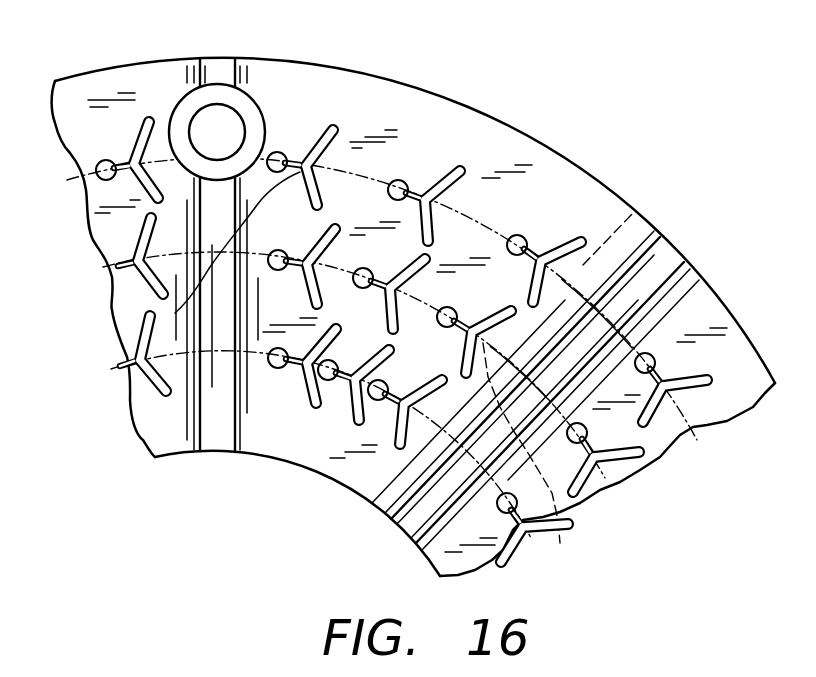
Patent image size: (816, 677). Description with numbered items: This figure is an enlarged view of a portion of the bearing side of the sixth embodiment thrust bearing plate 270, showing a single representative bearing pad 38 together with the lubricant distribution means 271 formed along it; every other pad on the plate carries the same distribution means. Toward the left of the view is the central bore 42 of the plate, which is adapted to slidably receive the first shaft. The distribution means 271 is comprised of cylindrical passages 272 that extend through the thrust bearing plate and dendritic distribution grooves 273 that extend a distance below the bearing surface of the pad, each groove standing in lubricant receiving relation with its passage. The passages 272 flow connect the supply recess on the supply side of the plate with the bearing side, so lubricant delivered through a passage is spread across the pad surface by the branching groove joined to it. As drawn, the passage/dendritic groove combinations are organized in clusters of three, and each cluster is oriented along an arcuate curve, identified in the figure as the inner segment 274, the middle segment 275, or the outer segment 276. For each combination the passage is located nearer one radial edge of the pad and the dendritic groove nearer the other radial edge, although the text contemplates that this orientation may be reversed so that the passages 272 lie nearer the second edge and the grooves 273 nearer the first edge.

The bearing pad 38 is at (262, 72).
The central bore 42 is at (190, 452).
The thrust bearing plate 270 is at (407, 295).
The distribution means 271 is at (428, 132).
The cylindrical passages 272 is at (270, 153).
The dendritic distribution grooves 273 is at (297, 270).
The inner segment 274 is at (358, 492).
The middle segment 275 is at (513, 512).
The outer segment 276 is at (637, 212).